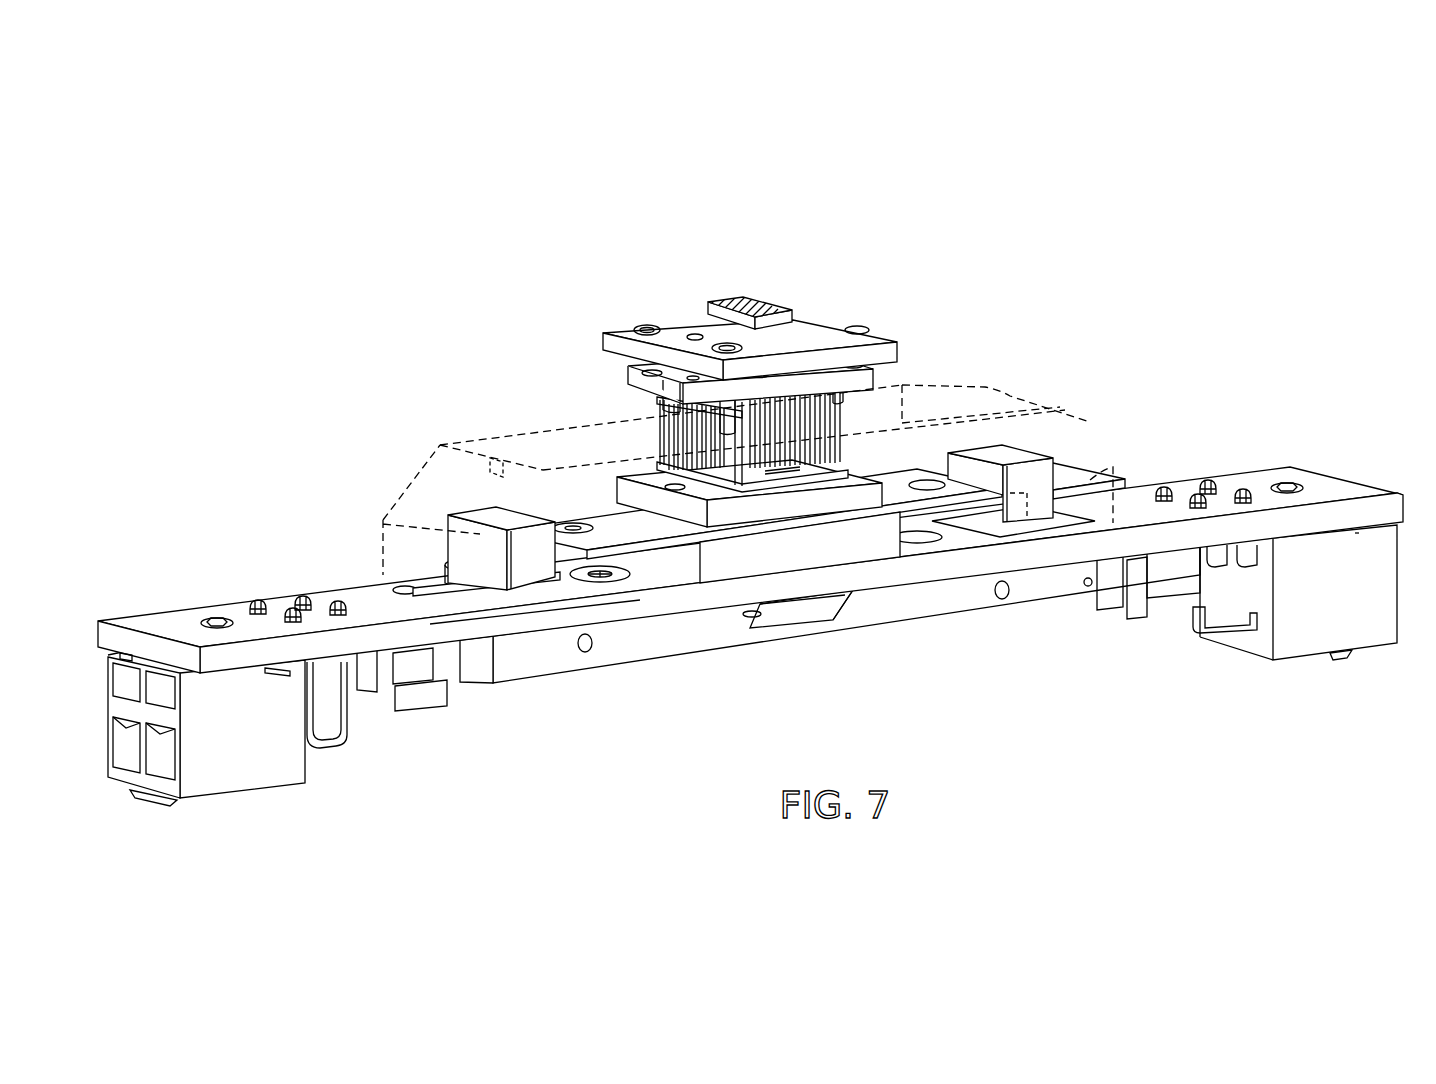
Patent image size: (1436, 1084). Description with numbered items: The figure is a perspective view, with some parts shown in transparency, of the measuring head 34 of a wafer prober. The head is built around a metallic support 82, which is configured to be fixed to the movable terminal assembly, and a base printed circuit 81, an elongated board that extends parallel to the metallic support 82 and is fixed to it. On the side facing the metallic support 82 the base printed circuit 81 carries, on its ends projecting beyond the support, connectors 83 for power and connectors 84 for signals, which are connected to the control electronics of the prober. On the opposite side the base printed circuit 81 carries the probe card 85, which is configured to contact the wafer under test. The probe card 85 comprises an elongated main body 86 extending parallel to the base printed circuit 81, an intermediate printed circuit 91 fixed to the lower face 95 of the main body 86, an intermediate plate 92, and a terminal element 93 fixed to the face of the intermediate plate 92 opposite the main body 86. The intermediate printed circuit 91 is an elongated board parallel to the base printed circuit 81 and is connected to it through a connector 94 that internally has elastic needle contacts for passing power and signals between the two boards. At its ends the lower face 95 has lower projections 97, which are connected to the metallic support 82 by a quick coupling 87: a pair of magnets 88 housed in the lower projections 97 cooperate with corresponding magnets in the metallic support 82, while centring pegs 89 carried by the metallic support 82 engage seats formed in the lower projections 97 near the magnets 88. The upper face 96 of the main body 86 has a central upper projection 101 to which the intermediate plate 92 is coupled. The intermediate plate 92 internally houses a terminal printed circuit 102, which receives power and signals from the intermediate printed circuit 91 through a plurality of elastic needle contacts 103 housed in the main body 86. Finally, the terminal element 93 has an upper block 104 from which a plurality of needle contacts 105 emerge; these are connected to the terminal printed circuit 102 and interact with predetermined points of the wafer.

The measuring head 34 is at (321, 268).
The base printed circuit 81 is at (183, 613).
The metallic support 82 is at (977, 613).
The connectors for power 83 is at (293, 763).
The connectors for signals 84 is at (413, 698).
The probe card 85 is at (415, 440).
The main body 86 is at (520, 428).
The quick coupling 87 is at (421, 543).
The magnets 88 is at (478, 528).
The centring pegs 89 is at (457, 583).
The intermediate printed circuit 91 is at (638, 550).
The intermediate plate 92 is at (598, 338).
The terminal element 93 is at (590, 322).
The connector 94 is at (857, 548).
The lower face 95 is at (672, 553).
The upper face 96 is at (455, 422).
The lower projections 97 is at (1120, 467).
The upper projection 101 is at (655, 398).
The terminal printed circuit 102 is at (857, 390).
The elastic needle contacts 103 is at (837, 440).
The upper block 104 is at (793, 313).
The needle contacts 105 is at (747, 307).